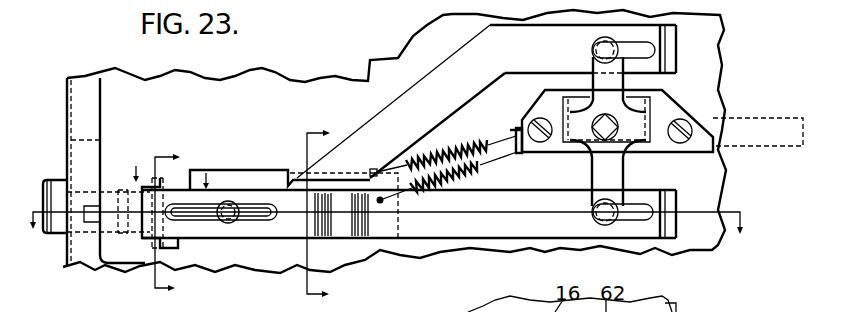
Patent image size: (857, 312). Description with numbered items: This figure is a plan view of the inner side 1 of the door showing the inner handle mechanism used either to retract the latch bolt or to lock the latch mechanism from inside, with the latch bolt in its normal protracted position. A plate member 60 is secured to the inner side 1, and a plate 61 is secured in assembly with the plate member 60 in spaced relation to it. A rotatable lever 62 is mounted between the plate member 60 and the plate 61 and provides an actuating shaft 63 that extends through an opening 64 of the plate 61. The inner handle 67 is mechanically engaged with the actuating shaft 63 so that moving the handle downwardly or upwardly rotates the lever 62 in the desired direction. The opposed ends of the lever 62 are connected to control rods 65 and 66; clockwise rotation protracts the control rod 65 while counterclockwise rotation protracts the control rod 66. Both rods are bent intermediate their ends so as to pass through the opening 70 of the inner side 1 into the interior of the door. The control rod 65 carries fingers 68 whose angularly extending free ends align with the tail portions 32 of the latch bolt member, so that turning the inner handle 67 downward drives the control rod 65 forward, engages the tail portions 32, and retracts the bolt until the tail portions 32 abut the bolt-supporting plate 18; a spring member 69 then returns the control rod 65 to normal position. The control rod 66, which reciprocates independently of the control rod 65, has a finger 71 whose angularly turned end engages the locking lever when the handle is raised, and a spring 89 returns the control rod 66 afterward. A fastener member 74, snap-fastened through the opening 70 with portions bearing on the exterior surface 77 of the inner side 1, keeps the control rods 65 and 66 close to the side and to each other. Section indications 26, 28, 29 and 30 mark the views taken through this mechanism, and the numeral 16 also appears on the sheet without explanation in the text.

The inner side of the door 1 is at (422, 38).
The pivot bolt 16 is at (561, 25).
The bolt-supporting plate 18 is at (100, 141).
The section line 26- 26 is at (395, 215).
The section line 28- 28 is at (310, 209).
The section line 29- 29 is at (161, 224).
The section arrows 30 is at (174, 175).
The tail portions 32 is at (108, 238).
The plate member 60 is at (680, 108).
The plate 61 is at (640, 110).
The rotatable lever 62 is at (598, 64).
The actuating shaft 63 is at (620, 145).
The opening 64 is at (586, 145).
The control rod 65 is at (462, 238).
The control rod 66 is at (523, 66).
The inner handle 67 is at (740, 142).
The fingers 68 is at (135, 235).
The spring member 69 is at (481, 170).
The opening 70 is at (260, 178).
The finger 71 is at (130, 228).
The fastener member 74 is at (178, 246).
The exterior surface 77 is at (262, 86).
The spring 89 is at (455, 146).